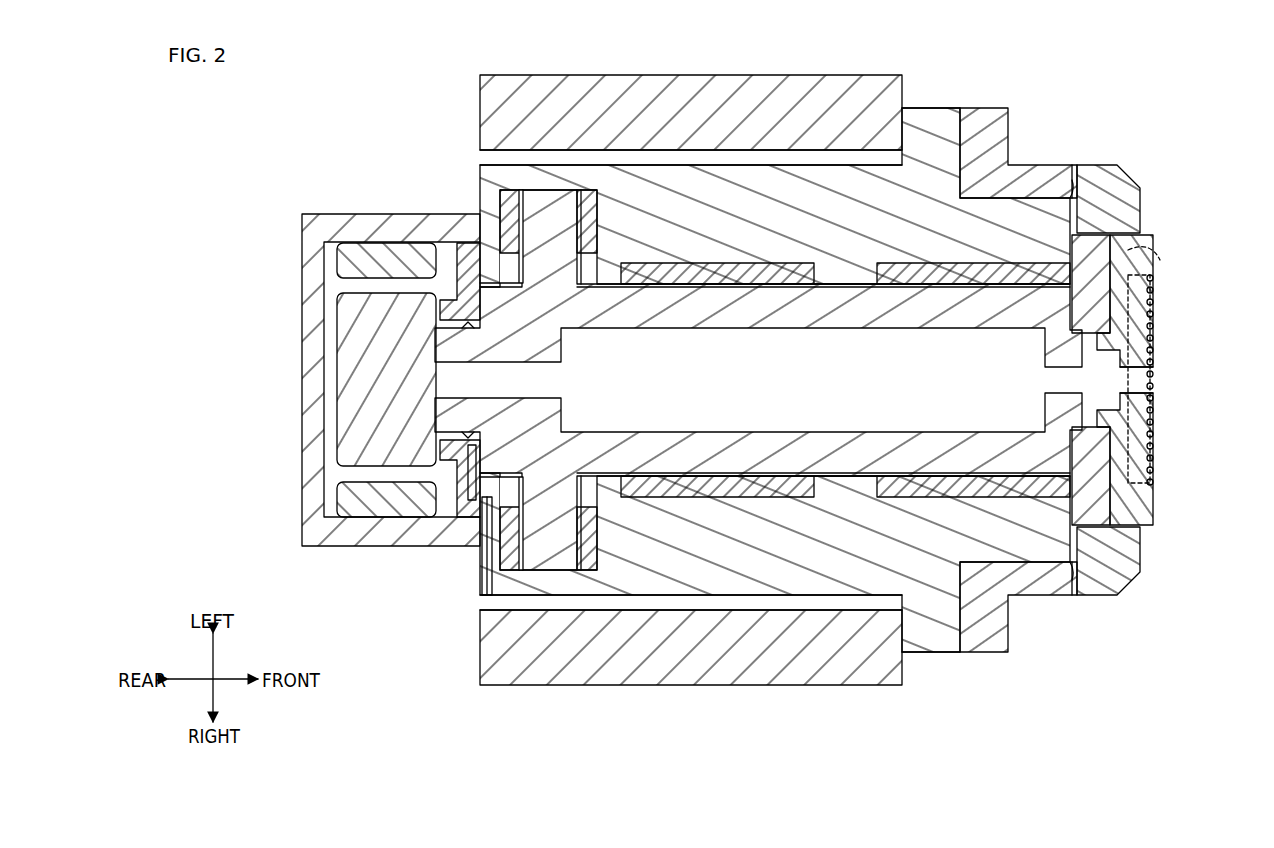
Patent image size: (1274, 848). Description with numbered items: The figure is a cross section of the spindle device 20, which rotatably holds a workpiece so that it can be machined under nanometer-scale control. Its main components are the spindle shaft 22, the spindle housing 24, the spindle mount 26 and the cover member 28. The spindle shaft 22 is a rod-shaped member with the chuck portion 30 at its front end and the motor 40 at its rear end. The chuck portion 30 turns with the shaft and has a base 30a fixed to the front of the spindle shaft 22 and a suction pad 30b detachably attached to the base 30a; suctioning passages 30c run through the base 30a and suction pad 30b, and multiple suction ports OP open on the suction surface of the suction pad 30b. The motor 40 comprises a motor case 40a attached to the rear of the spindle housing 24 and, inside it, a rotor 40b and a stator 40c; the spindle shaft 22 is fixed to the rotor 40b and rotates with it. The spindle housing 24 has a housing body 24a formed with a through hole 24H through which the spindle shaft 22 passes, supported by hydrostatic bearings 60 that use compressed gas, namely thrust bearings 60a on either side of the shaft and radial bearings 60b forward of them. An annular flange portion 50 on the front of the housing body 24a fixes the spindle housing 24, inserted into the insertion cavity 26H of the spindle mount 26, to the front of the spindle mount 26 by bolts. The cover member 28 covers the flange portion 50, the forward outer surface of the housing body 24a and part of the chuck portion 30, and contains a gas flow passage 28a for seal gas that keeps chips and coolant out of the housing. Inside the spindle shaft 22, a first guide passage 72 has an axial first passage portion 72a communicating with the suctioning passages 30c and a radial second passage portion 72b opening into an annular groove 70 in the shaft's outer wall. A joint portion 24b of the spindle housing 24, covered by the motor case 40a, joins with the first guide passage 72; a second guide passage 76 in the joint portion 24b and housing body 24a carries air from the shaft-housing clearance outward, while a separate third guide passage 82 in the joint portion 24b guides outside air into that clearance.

The spindle device 20 is at (1170, 60).
The spindle shaft 22 is at (836, 316).
The spindle housing 24 is at (736, 463).
The housing body 24a is at (797, 208).
The joint portion 24b is at (464, 252).
The through hole 24H is at (848, 278).
The spindle mount 26 is at (728, 95).
The insertion cavity 26H is at (495, 158).
The cover member 28 is at (1035, 185).
The gas flow passage 28a is at (1074, 188).
The chuck portion 30 is at (1162, 379).
The base 30a is at (1090, 306).
The suction pad 30b is at (1153, 492).
The suctioning passages 30c is at (1152, 254).
The suction ports OP is at (1152, 421).
The motor 40 is at (343, 406).
The motor case 40a is at (310, 330).
The rotor 40b is at (360, 390).
The stator 40c is at (355, 262).
The flange portion 50 is at (935, 122).
The bearings 60 is at (830, 380).
The thrust bearings 60a is at (590, 286).
The radial bearings 60b is at (722, 286).
The groove 70 is at (468, 334).
The first guide passage 72 is at (555, 473).
The first passage portion 72a is at (590, 522).
The second passage portion 72b is at (518, 580).
The second guide passage 76 is at (482, 588).
The third guide passage 82 is at (466, 474).